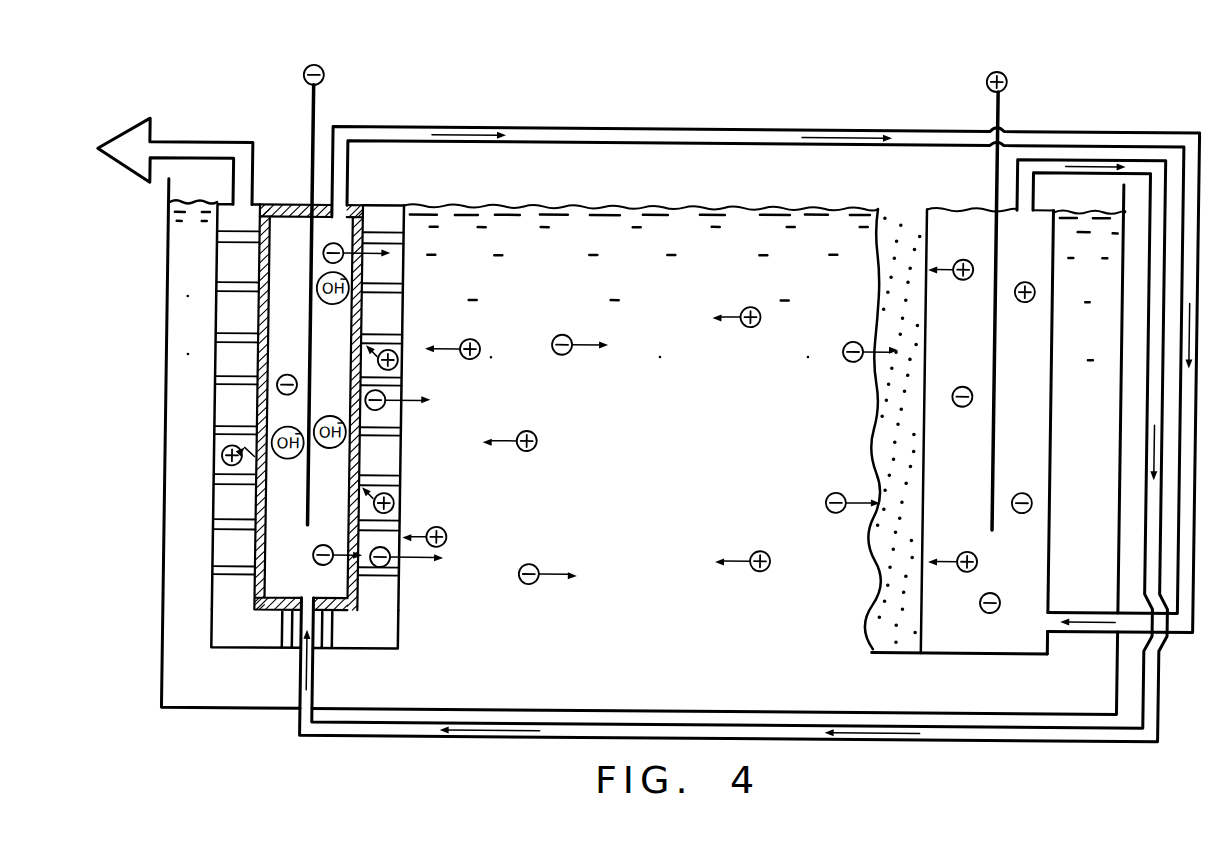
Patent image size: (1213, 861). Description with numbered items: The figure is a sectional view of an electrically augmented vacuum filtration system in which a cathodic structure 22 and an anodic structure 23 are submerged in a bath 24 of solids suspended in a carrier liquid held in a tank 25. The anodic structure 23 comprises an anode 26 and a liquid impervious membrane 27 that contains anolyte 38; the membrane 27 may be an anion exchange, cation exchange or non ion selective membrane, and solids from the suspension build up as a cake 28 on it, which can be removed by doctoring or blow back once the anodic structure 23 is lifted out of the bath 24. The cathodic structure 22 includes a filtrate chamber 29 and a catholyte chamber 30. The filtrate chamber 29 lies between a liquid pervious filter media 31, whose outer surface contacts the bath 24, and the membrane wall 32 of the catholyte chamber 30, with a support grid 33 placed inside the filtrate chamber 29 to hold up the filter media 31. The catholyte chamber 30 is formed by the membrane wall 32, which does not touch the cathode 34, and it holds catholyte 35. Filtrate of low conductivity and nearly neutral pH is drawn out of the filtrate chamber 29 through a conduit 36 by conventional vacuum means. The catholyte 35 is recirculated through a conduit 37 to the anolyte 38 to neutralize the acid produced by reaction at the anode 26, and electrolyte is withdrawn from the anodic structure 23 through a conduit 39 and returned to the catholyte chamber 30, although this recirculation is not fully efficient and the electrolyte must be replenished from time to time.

The cathodic structure 22 is at (405, 618).
The anodic structure 23 is at (993, 650).
The bath 24 is at (647, 261).
The tank 25 is at (275, 711).
The anode 26 is at (1002, 102).
The membrane 27 is at (954, 637).
The cake 28 is at (898, 214).
The filtrate chamber 29 is at (383, 218).
The catholyte chamber 30 is at (302, 265).
The liquid pervious filter media 31 is at (406, 266).
The membrane wall 32 is at (290, 205).
The support grid 33 is at (404, 290).
The cathode 34 is at (317, 112).
The catholyte 35 is at (302, 578).
The conduit 36 is at (181, 141).
The conduit 37 is at (569, 126).
The anolyte 38 is at (1030, 432).
The conduit 39 is at (1002, 735).